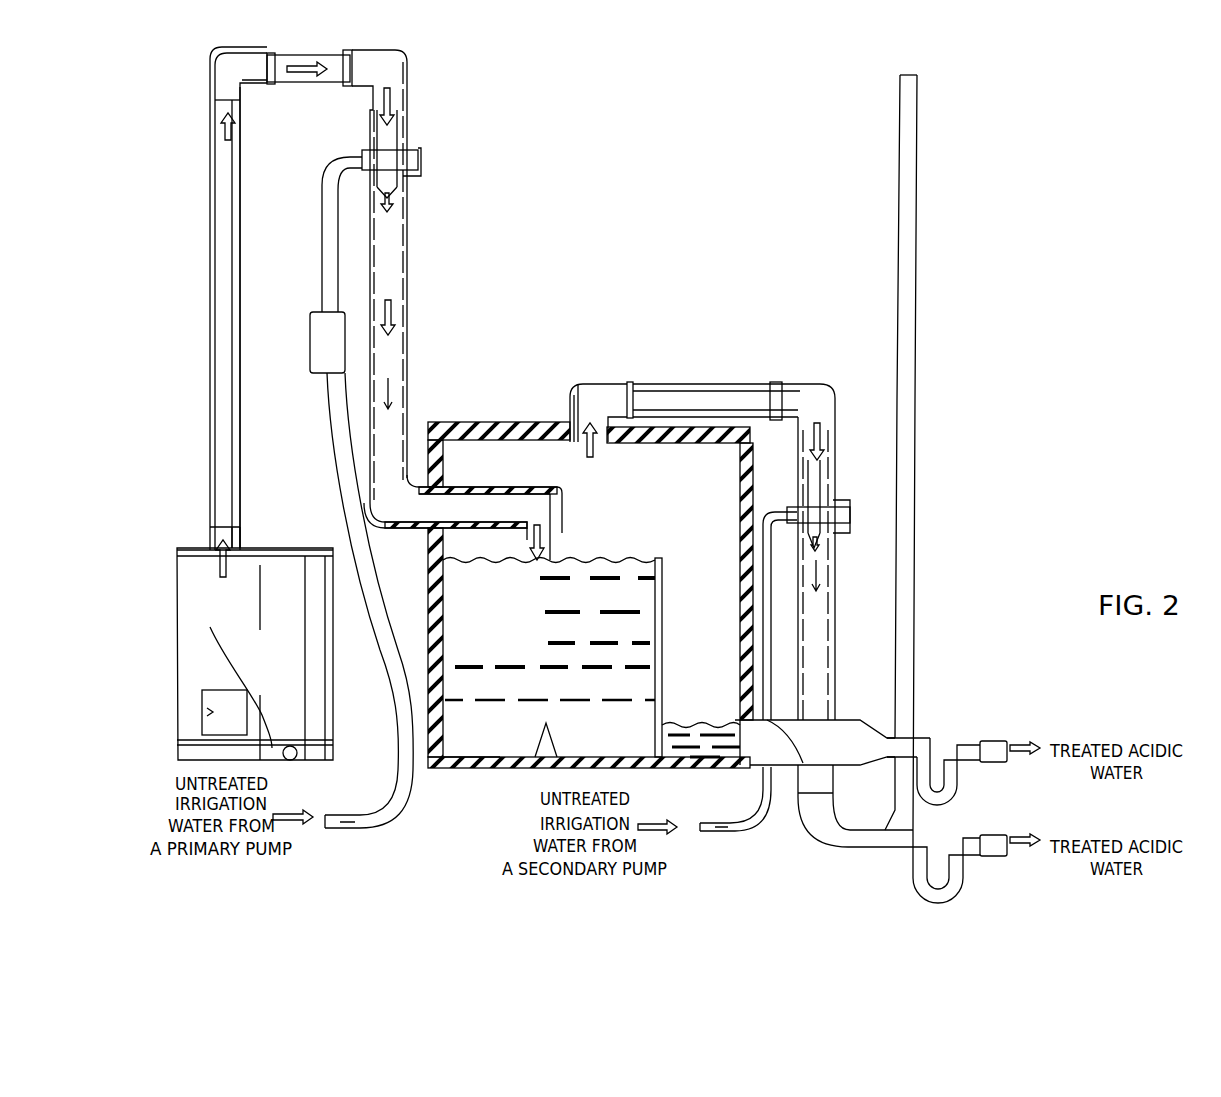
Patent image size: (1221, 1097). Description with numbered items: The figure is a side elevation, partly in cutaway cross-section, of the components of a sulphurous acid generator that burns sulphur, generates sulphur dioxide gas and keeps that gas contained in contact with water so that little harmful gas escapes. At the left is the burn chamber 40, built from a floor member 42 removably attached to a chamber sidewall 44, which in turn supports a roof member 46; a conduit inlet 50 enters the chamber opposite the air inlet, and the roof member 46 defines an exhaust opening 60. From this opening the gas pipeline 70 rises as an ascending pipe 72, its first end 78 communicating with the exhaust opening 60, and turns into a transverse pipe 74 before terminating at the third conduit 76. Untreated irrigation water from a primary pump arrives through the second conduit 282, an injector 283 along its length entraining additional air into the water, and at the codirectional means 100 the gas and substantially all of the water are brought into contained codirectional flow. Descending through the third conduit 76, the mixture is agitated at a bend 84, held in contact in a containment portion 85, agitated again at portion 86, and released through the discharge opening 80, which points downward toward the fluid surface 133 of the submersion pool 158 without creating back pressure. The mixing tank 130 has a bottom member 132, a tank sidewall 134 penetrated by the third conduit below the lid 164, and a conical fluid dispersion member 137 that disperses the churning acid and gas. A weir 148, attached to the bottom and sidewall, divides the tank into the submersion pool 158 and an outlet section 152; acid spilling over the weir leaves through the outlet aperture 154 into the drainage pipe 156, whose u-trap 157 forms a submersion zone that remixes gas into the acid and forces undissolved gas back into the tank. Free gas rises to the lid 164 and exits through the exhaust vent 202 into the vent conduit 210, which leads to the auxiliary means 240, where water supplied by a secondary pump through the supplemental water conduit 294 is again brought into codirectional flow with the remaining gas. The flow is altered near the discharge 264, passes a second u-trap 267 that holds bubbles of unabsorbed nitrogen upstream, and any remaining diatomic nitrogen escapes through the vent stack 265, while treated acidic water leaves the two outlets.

The burn chamber 40 is at (181, 546).
The floor member 42 is at (193, 745).
The chamber sidewall 44 is at (277, 573).
The roof member 46 is at (190, 547).
The conduit inlet 50 is at (202, 705).
The exhaust opening 60 is at (240, 528).
The gas pipeline 70 is at (274, 86).
The ascending pipe 72 is at (213, 280).
The transverse pipe 74 is at (292, 83).
The third conduit 76 is at (396, 267).
The first end of gas pipeline 78 is at (228, 484).
The discharge opening 80 is at (527, 533).
The bend 84 is at (378, 510).
The contact containment portion 85 is at (412, 506).
The directional change portion 86 is at (547, 500).
The codirectional flow means 100 is at (362, 187).
The mixing tank 130 is at (601, 553).
The bottom member 132 is at (515, 765).
The fluid surface 133 is at (657, 560).
The tank sidewall 134 is at (433, 762).
The fluid dispersion member 137 is at (548, 742).
The weir 148 is at (648, 755).
The outlet section 152 is at (725, 758).
The outlet aperture 154 is at (737, 730).
The drainage pipe 156 is at (915, 738).
The u-trap 157 is at (957, 795).
The submersion pool 158 is at (493, 733).
The lid 164 is at (470, 425).
The exhaust vent 202 is at (565, 420).
The vent conduit 210 is at (688, 386).
The auxiliary means 240 is at (843, 503).
The discharge 264 is at (907, 680).
The vent stack 265 is at (908, 185).
The u-trap 267 is at (963, 875).
The second conduit 282 is at (350, 815).
The injector 283 is at (320, 345).
The supplemental water conduit 294 is at (733, 828).